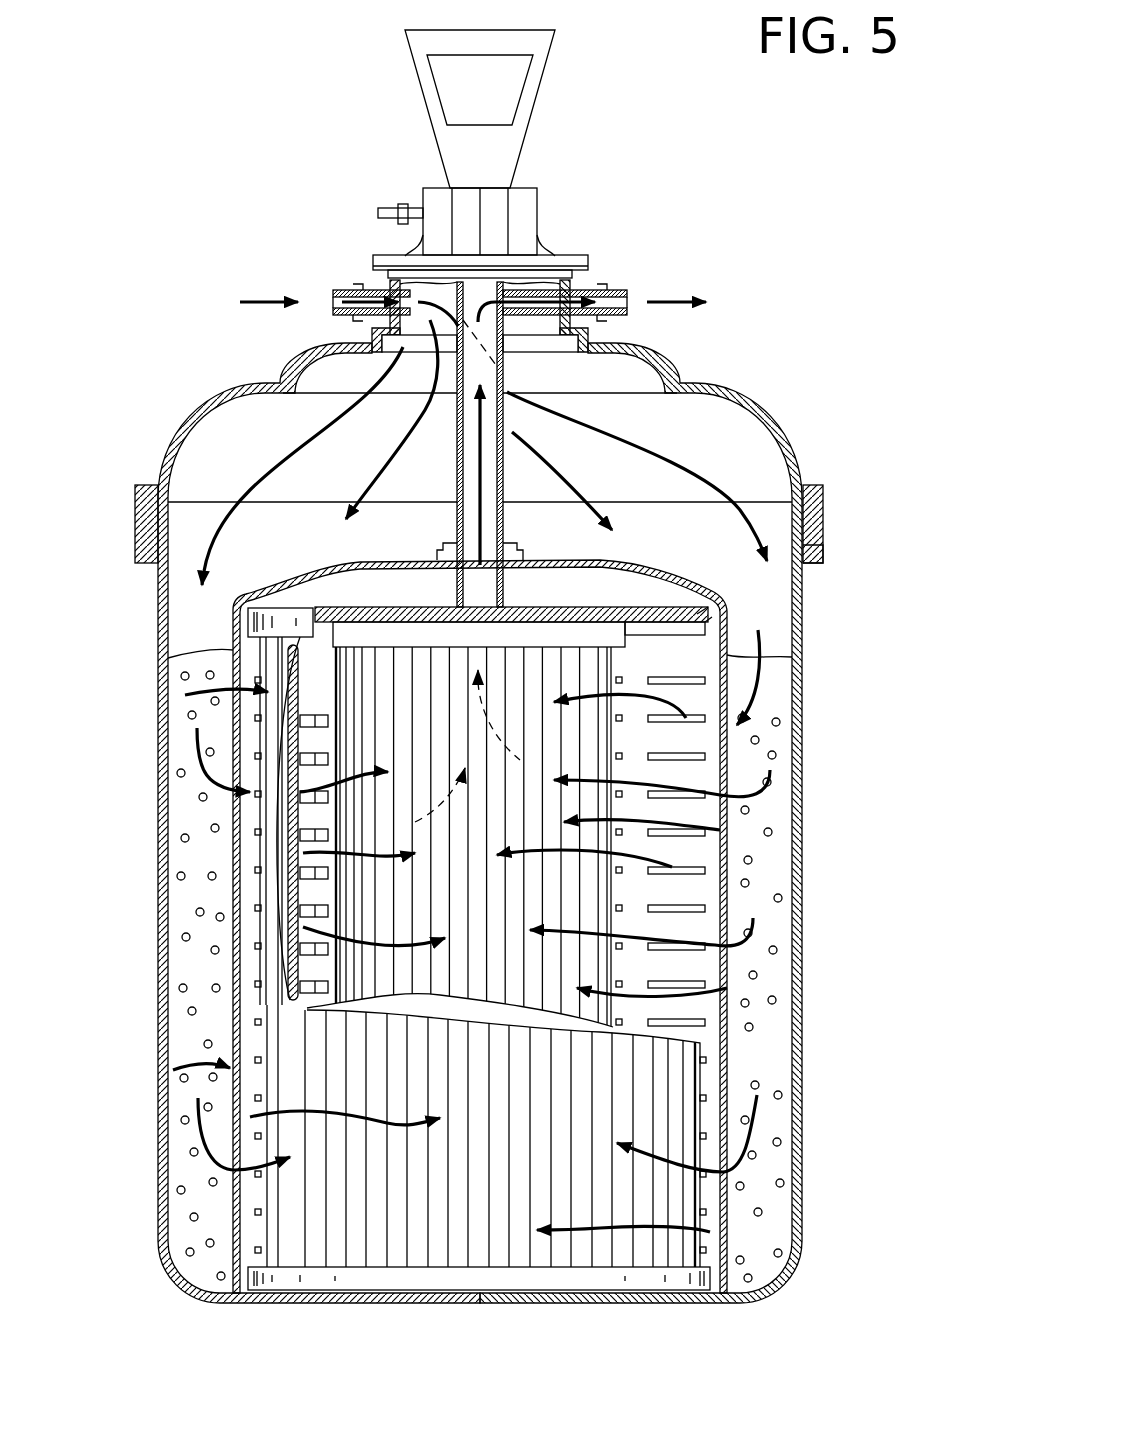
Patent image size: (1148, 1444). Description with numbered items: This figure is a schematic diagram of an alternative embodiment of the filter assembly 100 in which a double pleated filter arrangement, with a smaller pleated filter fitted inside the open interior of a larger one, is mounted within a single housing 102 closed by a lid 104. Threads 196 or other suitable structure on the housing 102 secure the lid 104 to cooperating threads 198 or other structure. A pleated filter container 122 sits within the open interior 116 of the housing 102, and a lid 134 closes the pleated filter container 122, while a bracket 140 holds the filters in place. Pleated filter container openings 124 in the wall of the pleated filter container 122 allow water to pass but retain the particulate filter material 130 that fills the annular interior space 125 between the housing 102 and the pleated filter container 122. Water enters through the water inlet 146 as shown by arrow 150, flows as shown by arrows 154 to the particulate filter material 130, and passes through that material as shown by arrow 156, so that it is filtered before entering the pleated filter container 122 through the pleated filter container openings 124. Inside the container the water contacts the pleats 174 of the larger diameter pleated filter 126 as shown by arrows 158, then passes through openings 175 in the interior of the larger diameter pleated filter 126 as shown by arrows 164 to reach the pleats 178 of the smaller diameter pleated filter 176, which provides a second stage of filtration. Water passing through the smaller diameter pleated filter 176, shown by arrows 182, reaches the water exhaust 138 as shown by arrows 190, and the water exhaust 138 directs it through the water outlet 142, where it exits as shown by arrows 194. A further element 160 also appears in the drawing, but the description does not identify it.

The filter assembly 100 is at (862, 266).
The housing 102 is at (158, 907).
The lid 104 is at (742, 397).
The open interior 116 is at (205, 622).
The pleated filter container 122 is at (173, 1070).
The pleated filter container openings 124 is at (255, 1030).
The annular interior space 125 is at (768, 1182).
The larger diameter pleated filter 126 is at (185, 695).
The particulate filter material 130 is at (183, 988).
The lid 134 is at (707, 577).
The water exhaust 138 is at (457, 430).
The bracket 140 is at (340, 597).
The water outlet 142 is at (622, 290).
The water inlet 146 is at (340, 290).
The arrow 150 is at (315, 272).
The arrows 154 is at (265, 473).
The arrow 156 is at (725, 692).
The arrows 158 is at (197, 753).
The upper filter element 160 is at (720, 830).
The arrows 164 is at (300, 792).
The pleats 174 is at (285, 1230).
The openings 175 is at (303, 853).
The smaller diameter pleated filter 176 is at (727, 988).
The pleats 178 is at (567, 903).
The arrows 182 is at (493, 750).
The arrows 190 is at (473, 510).
The arrows 194 is at (668, 300).
The threads 196 is at (810, 528).
The cooperating threads 198 is at (823, 548).